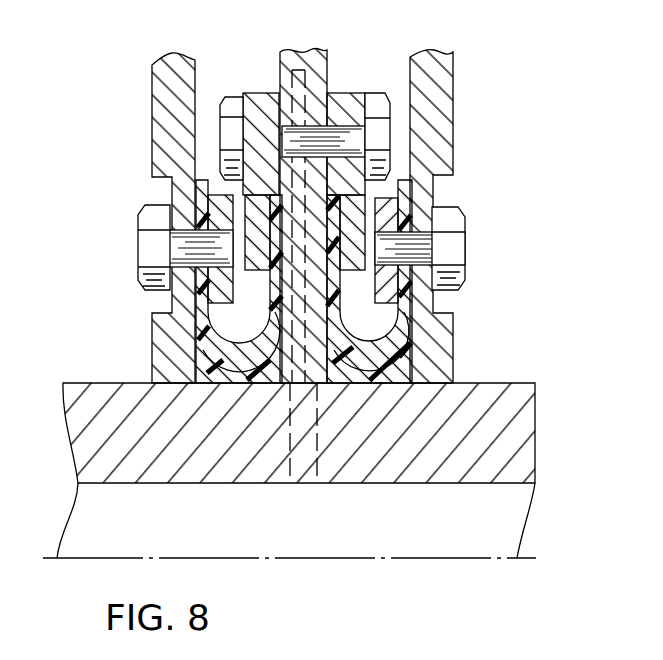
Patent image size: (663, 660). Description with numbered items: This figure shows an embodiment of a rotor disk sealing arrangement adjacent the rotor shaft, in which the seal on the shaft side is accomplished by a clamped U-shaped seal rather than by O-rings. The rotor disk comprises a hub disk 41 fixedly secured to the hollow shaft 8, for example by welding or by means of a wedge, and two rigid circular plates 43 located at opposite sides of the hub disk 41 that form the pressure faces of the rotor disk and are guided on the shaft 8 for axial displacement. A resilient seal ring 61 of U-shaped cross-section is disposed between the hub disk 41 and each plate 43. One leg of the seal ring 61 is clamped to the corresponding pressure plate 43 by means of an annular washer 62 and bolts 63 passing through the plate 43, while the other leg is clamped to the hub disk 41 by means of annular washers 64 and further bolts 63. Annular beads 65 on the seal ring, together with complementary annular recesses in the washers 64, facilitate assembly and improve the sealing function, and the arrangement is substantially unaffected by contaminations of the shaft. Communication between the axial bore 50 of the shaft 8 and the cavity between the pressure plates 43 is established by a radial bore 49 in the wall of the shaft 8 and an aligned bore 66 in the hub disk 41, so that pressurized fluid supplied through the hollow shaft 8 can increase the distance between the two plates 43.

The hollow shaft 8 is at (460, 383).
The hub disk 41 is at (318, 60).
The rigid circular plate 43 is at (165, 125).
The radial bore 49 is at (297, 442).
The axial bore 50 is at (401, 529).
The resilient seal ring 61 is at (335, 342).
The annular washer 62 is at (217, 288).
The bolt 63 is at (238, 100).
The annular washer 64 is at (255, 105).
The annular bead 65 is at (260, 200).
The aligned bore 66 is at (300, 326).